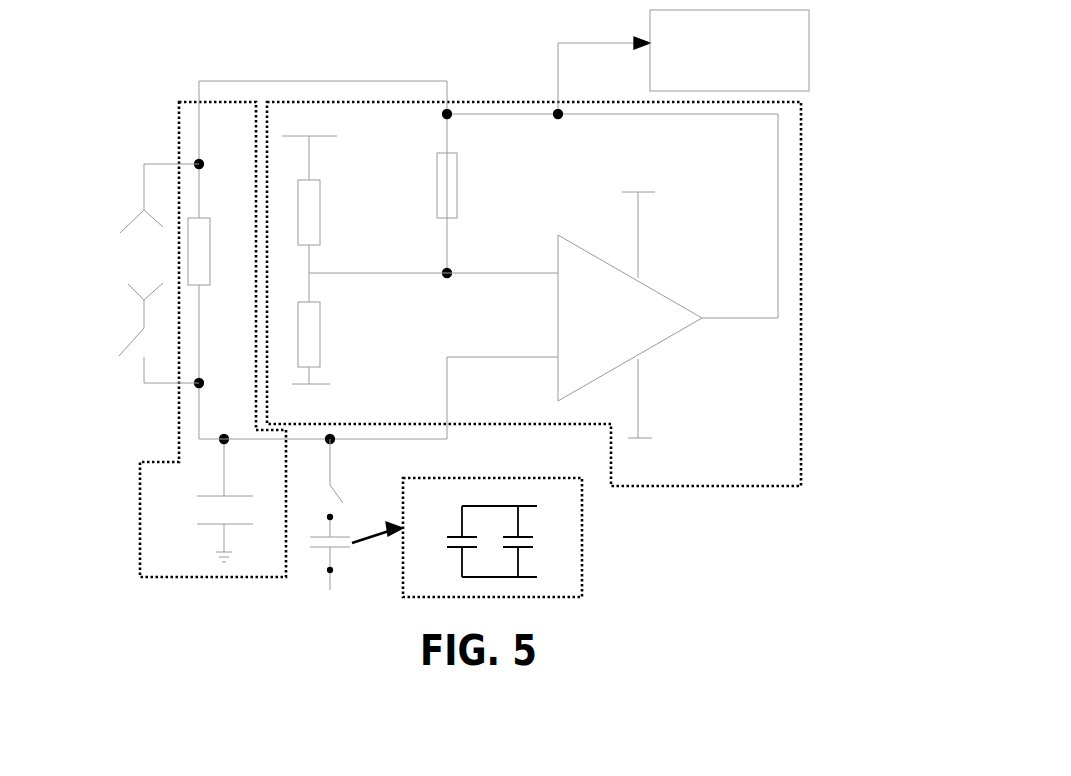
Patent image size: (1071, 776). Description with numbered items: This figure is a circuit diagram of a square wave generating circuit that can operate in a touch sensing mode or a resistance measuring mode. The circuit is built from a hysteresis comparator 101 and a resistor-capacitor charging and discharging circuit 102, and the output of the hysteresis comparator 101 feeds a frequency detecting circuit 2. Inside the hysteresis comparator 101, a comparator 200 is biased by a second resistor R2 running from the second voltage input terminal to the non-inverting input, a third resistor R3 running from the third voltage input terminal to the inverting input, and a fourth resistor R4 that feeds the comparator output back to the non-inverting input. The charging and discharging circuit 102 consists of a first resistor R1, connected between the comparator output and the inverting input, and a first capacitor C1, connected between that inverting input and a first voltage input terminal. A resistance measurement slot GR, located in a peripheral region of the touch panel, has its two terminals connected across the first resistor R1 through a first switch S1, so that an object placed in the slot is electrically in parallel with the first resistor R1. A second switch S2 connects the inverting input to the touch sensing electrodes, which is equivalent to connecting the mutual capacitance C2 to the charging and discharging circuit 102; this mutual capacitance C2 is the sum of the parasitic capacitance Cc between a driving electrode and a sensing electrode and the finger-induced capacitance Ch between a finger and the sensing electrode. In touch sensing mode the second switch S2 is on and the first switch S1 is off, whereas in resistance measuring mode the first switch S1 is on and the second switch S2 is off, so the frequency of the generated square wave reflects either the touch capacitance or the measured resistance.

The frequency detecting circuit 2 is at (809, 50).
The hysteresis comparator 101 is at (537, 261).
The resistor-capacitor (RC) charging and discharging circuit 102 is at (184, 329).
The comparator 200 is at (645, 317).
The first resistor R1 is at (217, 260).
The second resistor R2 is at (323, 206).
The third resistor R3 is at (328, 359).
The fourth resistor R4 is at (468, 185).
The first capacitor C1 is at (210, 499).
The mutual capacitance C2 is at (333, 552).
The first switch S1 is at (147, 333).
The second switch S2 is at (349, 488).
The resistance measurement slot GR is at (144, 217).
The finger-induced capacitance Ch is at (467, 537).
The parasitic capacitance Cc is at (533, 541).